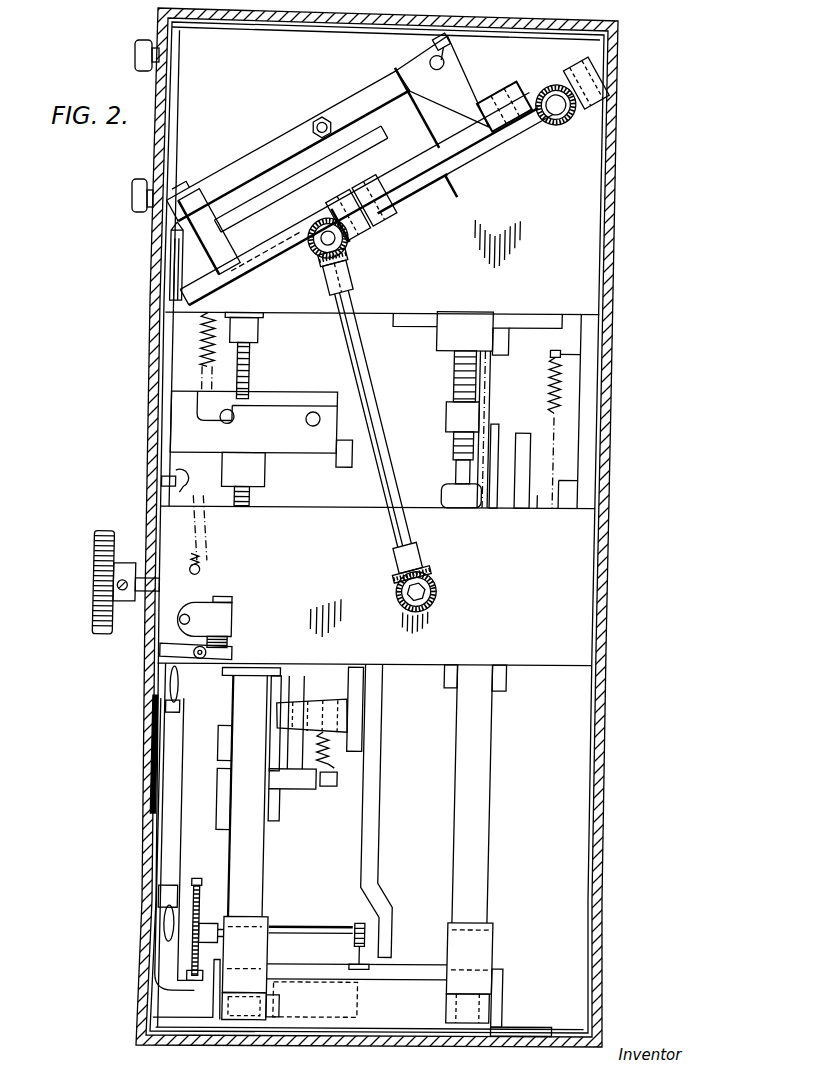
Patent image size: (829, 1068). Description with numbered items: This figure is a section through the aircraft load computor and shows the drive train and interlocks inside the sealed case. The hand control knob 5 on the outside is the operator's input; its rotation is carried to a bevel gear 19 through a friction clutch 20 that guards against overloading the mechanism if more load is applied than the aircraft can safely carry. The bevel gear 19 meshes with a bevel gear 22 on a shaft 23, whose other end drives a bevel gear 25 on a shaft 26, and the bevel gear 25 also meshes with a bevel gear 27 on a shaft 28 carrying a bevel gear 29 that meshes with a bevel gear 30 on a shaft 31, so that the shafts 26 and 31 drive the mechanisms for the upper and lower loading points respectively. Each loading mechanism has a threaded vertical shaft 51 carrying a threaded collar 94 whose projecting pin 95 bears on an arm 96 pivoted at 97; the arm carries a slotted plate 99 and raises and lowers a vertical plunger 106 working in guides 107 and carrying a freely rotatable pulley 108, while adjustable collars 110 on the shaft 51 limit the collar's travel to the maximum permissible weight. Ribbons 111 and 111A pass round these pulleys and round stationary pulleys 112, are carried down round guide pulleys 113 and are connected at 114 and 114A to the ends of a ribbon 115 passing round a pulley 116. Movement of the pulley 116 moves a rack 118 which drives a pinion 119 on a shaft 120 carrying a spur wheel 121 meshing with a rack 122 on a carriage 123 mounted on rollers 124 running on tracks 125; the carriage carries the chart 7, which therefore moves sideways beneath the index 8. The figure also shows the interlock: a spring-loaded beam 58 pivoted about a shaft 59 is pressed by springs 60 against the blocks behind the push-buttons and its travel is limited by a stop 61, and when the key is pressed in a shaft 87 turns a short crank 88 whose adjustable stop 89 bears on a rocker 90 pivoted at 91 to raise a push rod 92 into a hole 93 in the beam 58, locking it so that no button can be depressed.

The hand control knob 5 is at (126, 565).
The chart 7 is at (133, 845).
The index 8 is at (131, 756).
The bevel gear 19 is at (436, 592).
The friction clutch 20 is at (438, 615).
The bevel gear 22 is at (426, 561).
The shaft 23 is at (382, 418).
The bevel gear 25 is at (320, 213).
The shaft 26 is at (357, 271).
The bevel gear 27 is at (349, 195).
The shaft 28 is at (447, 155).
The bevel gear 29 is at (585, 111).
The bevel gear 30 is at (555, 132).
The shaft 31 is at (370, 128).
The vertical shaft 51 is at (359, 425).
The spring-loaded beam 58 is at (287, 142).
The shaft 59 is at (284, 240).
The springs 60 is at (273, 104).
The stop 61 is at (317, 113).
The shaft 87 is at (153, 632).
The short crank 88 is at (223, 616).
The adjustable stop 89 is at (238, 636).
The rocker 90 is at (231, 653).
The pivot 91 is at (205, 672).
The push rod 92 is at (159, 441).
The hole 93 is at (153, 261).
The threaded collar 94 is at (391, 385).
The projecting pin 95 is at (222, 429).
The arm 96 is at (254, 409).
The pivot 97 is at (313, 431).
The plate 99 is at (292, 417).
The vertical plunger 106 is at (385, 444).
The guides 107 is at (514, 457).
The pulley 108 is at (362, 743).
The adjustable collars 110 is at (352, 359).
The ribbon 111 is at (269, 792).
The second ribbon 111A is at (451, 794).
The stationary pulleys 112 is at (211, 777).
The guide pulleys 113 is at (383, 944).
The connection 114 is at (244, 991).
The connection 114A is at (444, 1006).
The ribbon 115 is at (408, 1002).
The pulley 116 is at (356, 991).
The rack 118 is at (329, 946).
The pinion 119 is at (398, 810).
The shaft 120 is at (275, 916).
The spur wheel 121 is at (203, 914).
The rack 122 is at (157, 995).
The carriage 123 is at (147, 849).
The rollers 124 is at (133, 804).
The tracks 125 is at (137, 804).